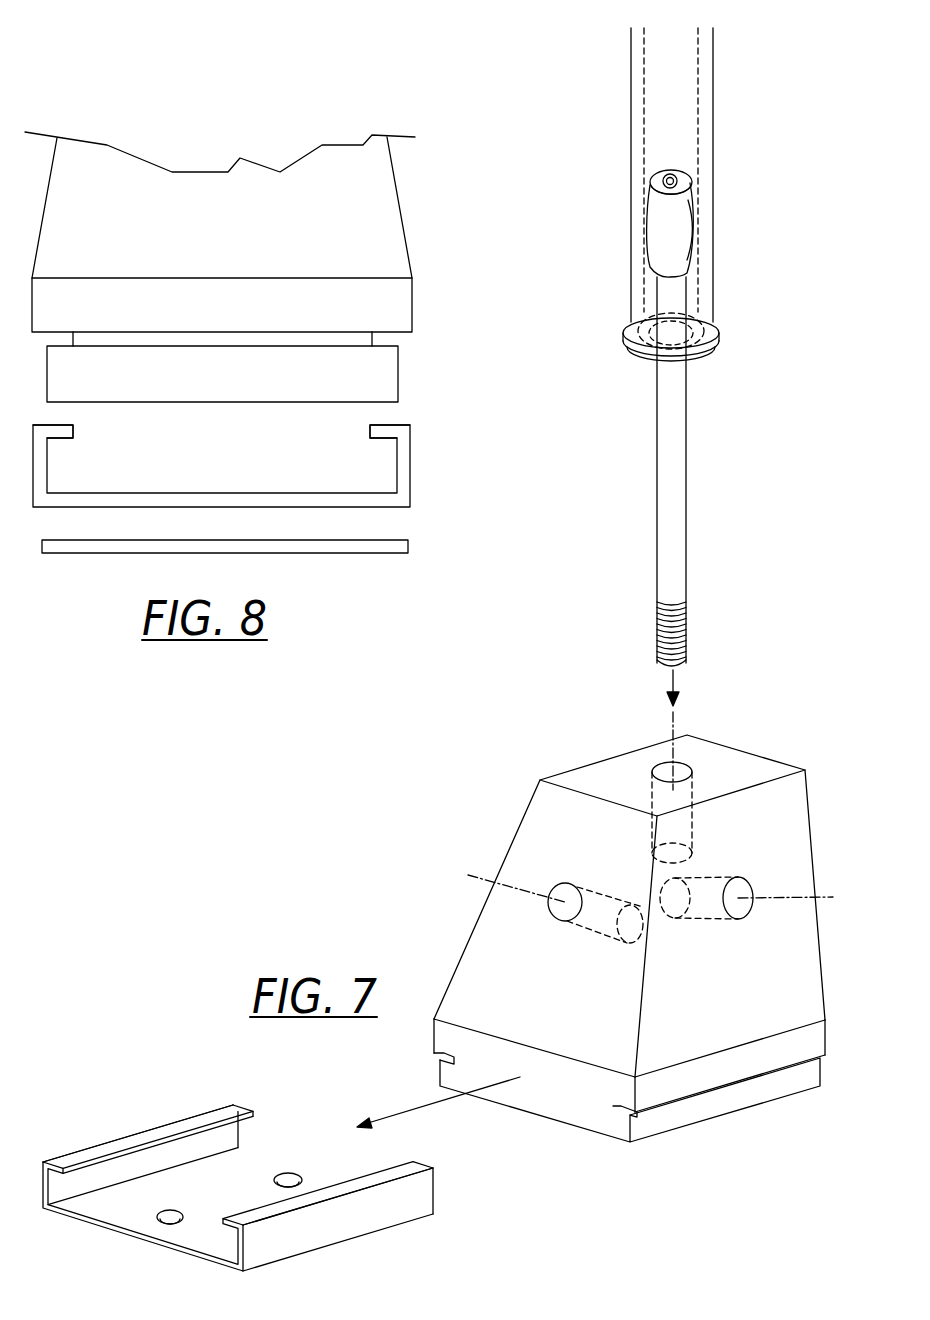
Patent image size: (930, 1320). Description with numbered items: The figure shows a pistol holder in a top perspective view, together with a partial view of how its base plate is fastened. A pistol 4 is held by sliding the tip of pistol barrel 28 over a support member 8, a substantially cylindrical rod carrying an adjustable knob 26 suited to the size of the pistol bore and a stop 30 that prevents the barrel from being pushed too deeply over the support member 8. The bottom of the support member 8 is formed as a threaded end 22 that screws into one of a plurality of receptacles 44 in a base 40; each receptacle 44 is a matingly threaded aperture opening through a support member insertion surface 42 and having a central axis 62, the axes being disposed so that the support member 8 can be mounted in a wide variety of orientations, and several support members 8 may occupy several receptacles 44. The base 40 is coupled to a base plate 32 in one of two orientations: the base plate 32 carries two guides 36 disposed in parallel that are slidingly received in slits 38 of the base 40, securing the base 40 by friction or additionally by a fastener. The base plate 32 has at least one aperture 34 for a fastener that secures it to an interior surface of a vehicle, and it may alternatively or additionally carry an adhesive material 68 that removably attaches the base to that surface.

In FIG. 7, the pistol 4 is at (631, 143).
In FIG. 7, the support member 8 is at (660, 498).
In FIG. 7, the threaded end 22 is at (657, 625).
In FIG. 7, the adjustable knob 26 is at (657, 223).
In FIG. 7, the tip of pistol barrel 28 is at (638, 271).
In FIG. 7, the stop 30 is at (623, 337).
In FIG. 8, the base plate 32 is at (247, 455).
In FIG. 7, the base plate 32 is at (245, 1171).
In FIG. 7, the aperture 34 is at (290, 1177).
In FIG. 8, the guide 36 is at (63, 425).
In FIG. 7, the guide 36 is at (253, 1101).
In FIG. 8, the slit 38 is at (392, 340).
In FIG. 7, the slit 38 is at (440, 1058).
In FIG. 8, the base 40 is at (390, 192).
In FIG. 7, the base 40 is at (639, 908).
In FIG. 7, the support member insertion surface 42 is at (590, 778).
In FIG. 7, the receptacle 44 is at (662, 765).
In FIG. 7, the central axis 62 is at (673, 722).
In FIG. 8, the adhesive material 68 is at (408, 545).